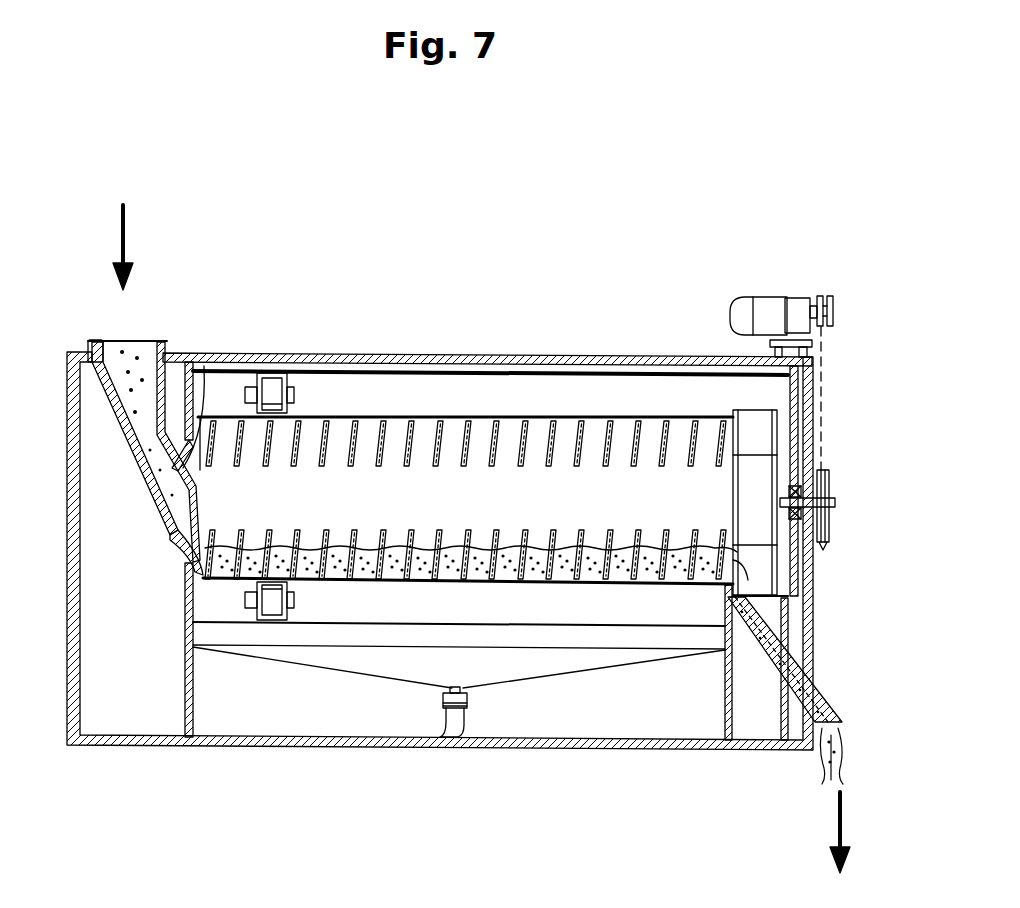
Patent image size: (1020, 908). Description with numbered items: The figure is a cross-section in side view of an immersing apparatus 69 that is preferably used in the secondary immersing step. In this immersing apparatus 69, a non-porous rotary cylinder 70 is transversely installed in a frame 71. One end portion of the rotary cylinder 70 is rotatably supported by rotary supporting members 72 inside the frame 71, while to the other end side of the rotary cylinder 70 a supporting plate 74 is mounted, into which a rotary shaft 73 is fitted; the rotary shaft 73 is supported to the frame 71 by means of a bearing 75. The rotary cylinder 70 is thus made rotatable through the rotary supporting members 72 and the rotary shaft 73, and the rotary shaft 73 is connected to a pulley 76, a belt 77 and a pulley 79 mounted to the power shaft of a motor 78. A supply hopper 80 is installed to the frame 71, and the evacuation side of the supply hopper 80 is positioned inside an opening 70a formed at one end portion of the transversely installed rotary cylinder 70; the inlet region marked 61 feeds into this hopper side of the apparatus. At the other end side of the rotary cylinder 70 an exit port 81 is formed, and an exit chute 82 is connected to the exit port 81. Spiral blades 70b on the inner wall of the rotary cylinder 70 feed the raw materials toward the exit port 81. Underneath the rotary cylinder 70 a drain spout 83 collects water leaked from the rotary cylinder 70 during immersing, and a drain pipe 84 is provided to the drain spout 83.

The immersing apparatus 69 is at (699, 202).
The inlet chute 61 is at (108, 341).
The supply hopper 80 is at (177, 362).
The rotary cylinder 70 is at (467, 447).
The opening 70a is at (199, 364).
The spiral blades 70b is at (437, 428).
The frame 71 is at (505, 357).
The rotary supporting members 72 is at (277, 371).
The rotary shaft 73 is at (834, 503).
The supporting plate 74 is at (776, 452).
The bearing 75 is at (827, 528).
The pulley 76 is at (823, 480).
The belt 77 is at (824, 383).
The motor 78 is at (755, 299).
The pulley 79 is at (826, 297).
The exit port 81 is at (742, 565).
The exit chute 82 is at (812, 702).
The drain spout 83 is at (510, 672).
The drain pipe 84 is at (452, 735).